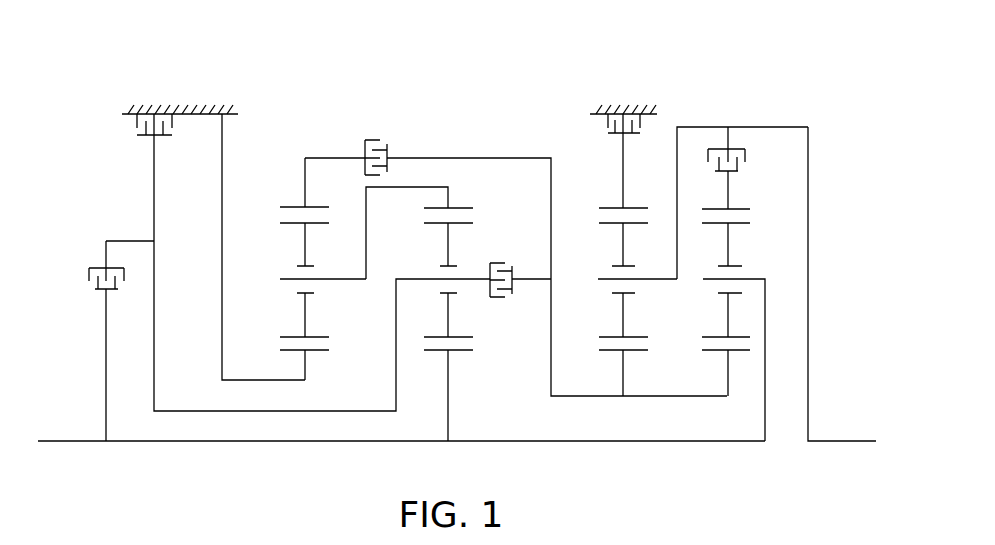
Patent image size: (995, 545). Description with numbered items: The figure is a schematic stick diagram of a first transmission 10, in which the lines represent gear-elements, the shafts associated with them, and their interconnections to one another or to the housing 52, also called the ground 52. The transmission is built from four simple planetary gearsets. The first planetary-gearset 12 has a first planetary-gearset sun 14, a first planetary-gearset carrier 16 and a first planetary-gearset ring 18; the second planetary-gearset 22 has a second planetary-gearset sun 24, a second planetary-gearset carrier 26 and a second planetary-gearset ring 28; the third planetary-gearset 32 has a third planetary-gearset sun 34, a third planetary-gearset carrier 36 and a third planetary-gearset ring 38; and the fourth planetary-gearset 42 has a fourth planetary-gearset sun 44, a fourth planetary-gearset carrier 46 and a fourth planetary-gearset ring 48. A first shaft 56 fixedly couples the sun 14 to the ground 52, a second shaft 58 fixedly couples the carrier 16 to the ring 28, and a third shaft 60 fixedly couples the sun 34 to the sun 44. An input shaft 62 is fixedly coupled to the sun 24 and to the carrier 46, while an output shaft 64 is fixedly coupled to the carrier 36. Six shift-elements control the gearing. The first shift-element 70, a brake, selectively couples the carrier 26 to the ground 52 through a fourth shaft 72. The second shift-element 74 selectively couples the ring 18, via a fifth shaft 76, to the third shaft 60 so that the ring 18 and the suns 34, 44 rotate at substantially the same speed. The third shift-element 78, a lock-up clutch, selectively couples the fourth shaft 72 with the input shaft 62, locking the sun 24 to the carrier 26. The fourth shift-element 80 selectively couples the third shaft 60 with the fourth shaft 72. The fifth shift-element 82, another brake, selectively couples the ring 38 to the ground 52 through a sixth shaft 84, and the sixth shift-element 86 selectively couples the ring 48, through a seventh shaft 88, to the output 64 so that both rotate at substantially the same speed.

The first transmission 10 is at (121, 65).
The first planetary-gearset 12 is at (307, 257).
The first planetary-gearset sun 14 is at (305, 375).
The first planetary-gearset carrier 16 is at (281, 268).
The first planetary-gearset ring 18 is at (305, 197).
The second planetary-gearset 22 is at (456, 322).
The second planetary-gearset sun 24 is at (449, 392).
The second planetary-gearset carrier 26 is at (430, 268).
The second planetary-gearset ring 28 is at (449, 198).
The third planetary-gearset 32 is at (620, 325).
The third planetary-gearset sun 34 is at (623, 387).
The third planetary-gearset carrier 36 is at (596, 268).
The third planetary-gearset ring 38 is at (623, 193).
The fourth planetary-gearset 42 is at (728, 328).
The fourth planetary-gearset sun 44 is at (727, 387).
The fourth planetary-gearset carrier 46 is at (754, 268).
The fourth planetary-gearset ring 48 is at (728, 202).
The housing 52 is at (193, 112).
The first shaft 56 is at (222, 258).
The second shaft 58 is at (340, 280).
The third shaft 60 is at (645, 396).
The input shaft 62 is at (275, 441).
The output shaft 64 is at (808, 273).
The first shift-element 70 is at (147, 137).
The fourth shaft 72 is at (154, 317).
The second shift-element 74 is at (387, 152).
The fifth shaft 76 is at (350, 157).
The third shift-element 78 is at (98, 268).
The fourth shift-element 80 is at (512, 288).
The fifth shift-element 82 is at (610, 137).
The sixth shaft 84 is at (623, 177).
The sixth shift-element 86 is at (720, 147).
The seventh shaft 88 is at (728, 178).